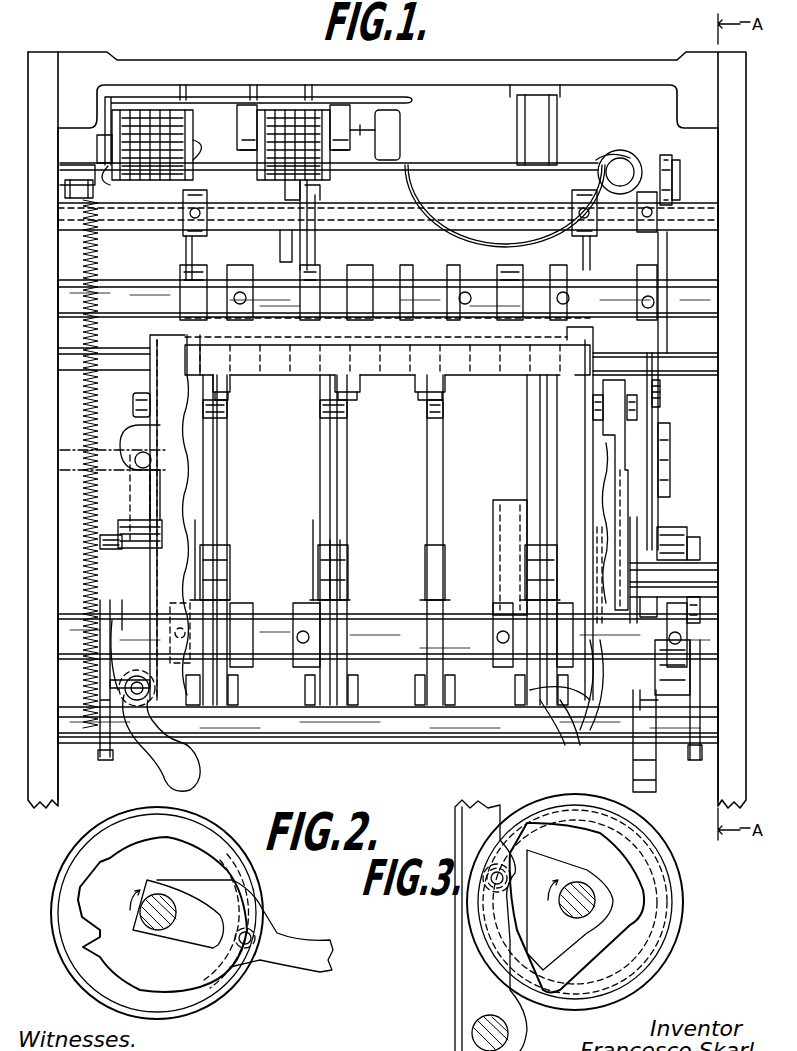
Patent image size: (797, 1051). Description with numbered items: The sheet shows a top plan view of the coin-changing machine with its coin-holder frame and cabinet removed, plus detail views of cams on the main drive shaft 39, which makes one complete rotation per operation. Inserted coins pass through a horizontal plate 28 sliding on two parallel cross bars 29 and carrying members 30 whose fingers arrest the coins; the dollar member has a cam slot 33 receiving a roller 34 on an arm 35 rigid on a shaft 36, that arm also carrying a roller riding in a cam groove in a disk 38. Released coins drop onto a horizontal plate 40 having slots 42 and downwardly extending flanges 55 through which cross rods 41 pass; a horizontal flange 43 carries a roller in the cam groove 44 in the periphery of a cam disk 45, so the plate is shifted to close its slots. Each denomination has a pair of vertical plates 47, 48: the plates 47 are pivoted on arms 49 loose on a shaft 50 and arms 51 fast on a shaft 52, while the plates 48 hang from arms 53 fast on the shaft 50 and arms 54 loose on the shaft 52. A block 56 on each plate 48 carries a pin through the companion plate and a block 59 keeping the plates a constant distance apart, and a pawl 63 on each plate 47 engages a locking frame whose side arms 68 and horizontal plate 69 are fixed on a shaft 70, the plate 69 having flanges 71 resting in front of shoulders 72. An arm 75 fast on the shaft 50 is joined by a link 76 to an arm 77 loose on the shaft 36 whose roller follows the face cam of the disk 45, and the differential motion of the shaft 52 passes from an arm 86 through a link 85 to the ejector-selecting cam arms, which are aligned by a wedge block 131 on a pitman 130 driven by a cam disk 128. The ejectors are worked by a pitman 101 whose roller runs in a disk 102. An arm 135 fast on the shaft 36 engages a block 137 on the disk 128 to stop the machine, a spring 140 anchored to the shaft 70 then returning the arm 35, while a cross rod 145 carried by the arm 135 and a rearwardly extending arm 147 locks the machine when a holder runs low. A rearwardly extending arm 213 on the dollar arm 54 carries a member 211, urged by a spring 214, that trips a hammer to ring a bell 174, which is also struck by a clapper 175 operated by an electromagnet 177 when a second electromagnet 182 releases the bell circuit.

In FIG. 1, the electromagnet 182 is at (168, 112).
In FIG. 1, the electromagnet 177 is at (280, 112).
In FIG. 1, the bell clapper 175 is at (456, 166).
In FIG. 1, the bell 174 is at (570, 175).
In FIG. 1, the link 85 is at (680, 185).
In FIG. 1, the rearwardly extending arm 213 is at (285, 190).
In FIG. 1, the member 211 is at (320, 262).
In FIG. 1, the spring 214 is at (300, 250).
In FIG. 1, the shaft 70 is at (140, 216).
In FIG. 1, the side arms 68 is at (182, 250).
In FIG. 1, the arm 86 is at (662, 250).
In FIG. 1, the shaft 52 is at (695, 285).
In FIG. 1, the arms 54 is at (200, 268).
In FIG. 1, the arms 51 is at (240, 268).
In FIG. 1, the flanges 55 is at (150, 338).
In FIG. 1, the horizontal plate 69 is at (290, 362).
In FIG. 1, the flanges 71 is at (228, 395).
In FIG. 1, the shoulder 72 is at (230, 400).
In FIG. 1, the pawl 63 is at (210, 405).
In FIG. 1, the slots 42 is at (215, 470).
In FIG. 1, the plates 48 is at (335, 480).
In FIG. 1, the plates 47 is at (335, 485).
In FIG. 1, the cross bars 29 is at (140, 417).
In FIG. 1, the horizontal plate 28 is at (128, 445).
In FIG. 1, the members 30 is at (120, 470).
In FIG. 1, the spring 140 is at (150, 478).
In FIG. 1, the disk 38 is at (140, 515).
In FIG. 1, the cross rods 41 is at (662, 386).
In FIG. 1, the horizontal plate 40 is at (600, 440).
In FIG. 1, the pitman 130 is at (655, 450).
In FIG. 1, the horizontal flange 43 is at (620, 495).
In FIG. 1, the block 131 is at (670, 486).
In FIG. 1, the cam disk 128 is at (663, 527).
In FIG. 1, the cross rod 145 is at (332, 540).
In FIG. 1, the pitman 101 is at (493, 510).
In FIG. 2, the pitman 101 is at (308, 948).
In FIG. 1, the disk 102 is at (493, 526).
In FIG. 2, the disk 102 is at (262, 893).
In FIG. 1, the block 56 is at (215, 575).
In FIG. 1, the block 59 is at (233, 600).
In FIG. 1, the arms 49 is at (240, 600).
In FIG. 1, the arms 53 is at (205, 600).
In FIG. 1, the block 137 is at (700, 590).
In FIG. 1, the shaft 50 is at (700, 612).
In FIG. 1, the rearwardly extending arm 147 is at (41, 430).
In FIG. 1, the arm 75 is at (690, 665).
In FIG. 1, the arm 135 is at (700, 698).
In FIG. 1, the link 76 is at (655, 790).
In FIG. 1, the arm 77 is at (640, 785).
In FIG. 3, the arm 77 is at (455, 930).
In FIG. 1, the cam groove 44 is at (585, 720).
In FIG. 3, the cam groove 44 is at (650, 955).
In FIG. 1, the cam disk 45 is at (560, 730).
In FIG. 3, the cam disk 45 is at (678, 928).
In FIG. 1, the shaft 36 is at (380, 745).
In FIG. 3, the shaft 36 is at (470, 1034).
In FIG. 1, the arm 35 is at (105, 760).
In FIG. 1, the roller 34 is at (135, 705).
In FIG. 1, the cam slot 33 is at (195, 765).
In FIG. 2, the main drive shaft 39 is at (170, 895).
In FIG. 3, the main drive shaft 39 is at (575, 920).